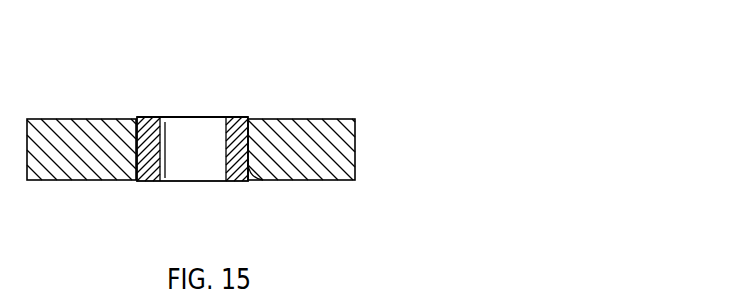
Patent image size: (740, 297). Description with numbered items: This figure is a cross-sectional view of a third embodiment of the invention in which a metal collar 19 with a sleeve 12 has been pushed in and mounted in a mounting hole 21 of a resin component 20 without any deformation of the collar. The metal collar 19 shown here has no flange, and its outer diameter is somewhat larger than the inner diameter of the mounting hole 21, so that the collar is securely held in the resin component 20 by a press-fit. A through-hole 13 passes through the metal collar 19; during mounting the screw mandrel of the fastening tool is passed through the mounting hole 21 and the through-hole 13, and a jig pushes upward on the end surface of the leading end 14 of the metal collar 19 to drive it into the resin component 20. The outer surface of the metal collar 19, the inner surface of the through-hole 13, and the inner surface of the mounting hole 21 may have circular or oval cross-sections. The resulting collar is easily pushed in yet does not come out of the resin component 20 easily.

The sleeve 12 is at (136, 143).
The through-hole 13 is at (225, 142).
The leading end 14 is at (150, 181).
The metal collar 19 is at (241, 108).
The resin component 20 is at (310, 135).
The mounting hole 21 is at (264, 181).